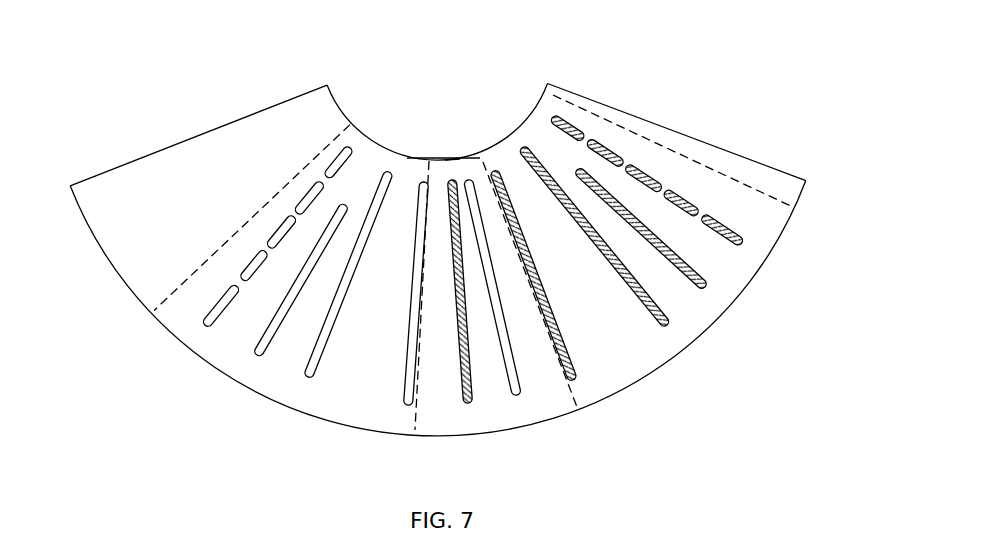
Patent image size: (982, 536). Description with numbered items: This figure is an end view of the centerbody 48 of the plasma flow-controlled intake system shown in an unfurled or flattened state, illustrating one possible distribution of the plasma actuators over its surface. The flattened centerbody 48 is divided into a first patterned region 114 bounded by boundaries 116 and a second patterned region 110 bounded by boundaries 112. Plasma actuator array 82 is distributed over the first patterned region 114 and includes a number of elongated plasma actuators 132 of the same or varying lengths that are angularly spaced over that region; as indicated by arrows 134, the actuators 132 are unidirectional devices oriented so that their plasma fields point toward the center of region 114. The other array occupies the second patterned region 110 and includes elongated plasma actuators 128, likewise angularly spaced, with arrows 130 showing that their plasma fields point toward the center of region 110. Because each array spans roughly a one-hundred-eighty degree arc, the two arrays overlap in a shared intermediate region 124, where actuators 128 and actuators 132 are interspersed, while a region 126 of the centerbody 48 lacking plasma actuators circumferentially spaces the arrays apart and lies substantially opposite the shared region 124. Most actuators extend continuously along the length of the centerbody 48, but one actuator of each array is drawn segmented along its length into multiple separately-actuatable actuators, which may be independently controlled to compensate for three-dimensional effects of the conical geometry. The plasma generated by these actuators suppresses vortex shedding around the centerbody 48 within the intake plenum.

The centerbody 48 is at (193, 128).
The plasma actuator array 82 is at (700, 200).
The second patterned region 110 is at (365, 157).
The boundaries 112 is at (290, 183).
The first patterned region 114 is at (543, 138).
The boundaries 116 is at (430, 158).
The shared intermediate region 124 is at (457, 170).
The region lacking plasma actuators 126 is at (305, 144).
The elongated plasma actuators 128 is at (257, 356).
The arrows 130 is at (313, 248).
The elongated plasma actuators 132 is at (468, 405).
The arrows 134 is at (483, 286).